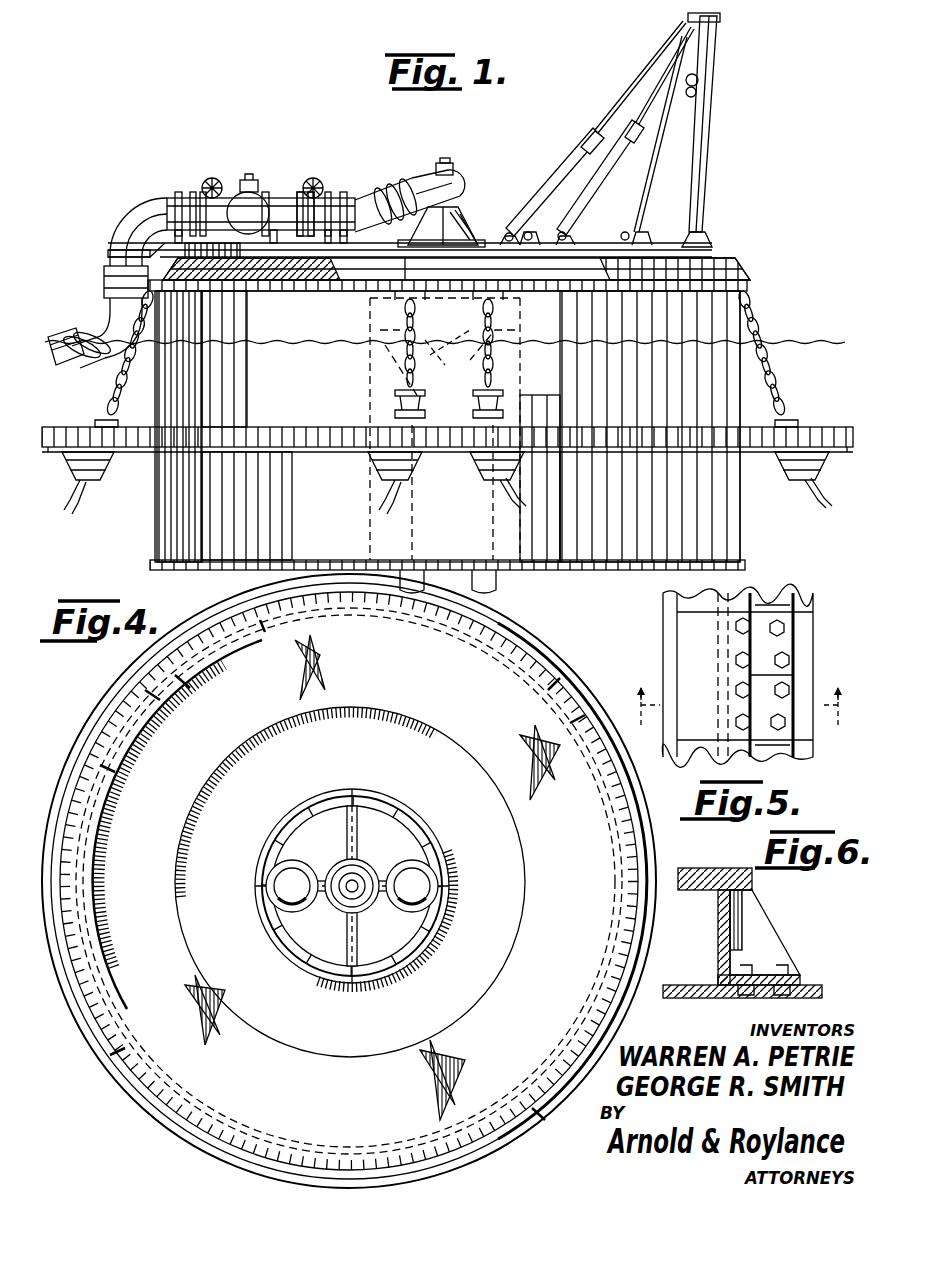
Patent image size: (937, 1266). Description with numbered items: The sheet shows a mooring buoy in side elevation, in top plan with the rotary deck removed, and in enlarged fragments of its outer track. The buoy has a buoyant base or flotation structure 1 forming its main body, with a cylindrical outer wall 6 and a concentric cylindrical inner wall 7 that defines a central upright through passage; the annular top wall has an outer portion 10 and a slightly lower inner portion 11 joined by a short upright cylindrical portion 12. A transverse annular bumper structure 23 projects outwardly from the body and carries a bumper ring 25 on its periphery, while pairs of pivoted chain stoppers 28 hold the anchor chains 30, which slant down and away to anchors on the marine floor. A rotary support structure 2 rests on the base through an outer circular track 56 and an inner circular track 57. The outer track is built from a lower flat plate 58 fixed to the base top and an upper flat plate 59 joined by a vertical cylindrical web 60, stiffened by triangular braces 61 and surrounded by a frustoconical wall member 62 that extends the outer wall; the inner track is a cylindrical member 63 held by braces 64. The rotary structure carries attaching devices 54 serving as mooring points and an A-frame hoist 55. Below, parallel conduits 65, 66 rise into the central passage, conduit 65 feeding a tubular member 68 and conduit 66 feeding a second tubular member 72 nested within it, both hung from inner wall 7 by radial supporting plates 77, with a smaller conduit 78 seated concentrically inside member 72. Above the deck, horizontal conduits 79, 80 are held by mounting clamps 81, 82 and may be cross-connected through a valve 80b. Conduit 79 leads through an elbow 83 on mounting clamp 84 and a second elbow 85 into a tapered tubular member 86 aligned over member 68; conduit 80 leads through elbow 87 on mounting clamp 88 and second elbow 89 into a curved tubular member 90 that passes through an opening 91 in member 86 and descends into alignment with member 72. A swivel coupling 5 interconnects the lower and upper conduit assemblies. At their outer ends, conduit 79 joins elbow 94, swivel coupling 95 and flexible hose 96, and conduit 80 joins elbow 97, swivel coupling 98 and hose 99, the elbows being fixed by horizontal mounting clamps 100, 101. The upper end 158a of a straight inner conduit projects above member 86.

In FIG. 1, the buoyant base or flotation structure 1 is at (768, 330).
In FIG. 1, the rotary support structure 2 is at (705, 240).
In FIG. 1, the swivel coupling 5 is at (403, 272).
In FIG. 1, the cylindrical outer wall 6 is at (664, 504).
In FIG. 5, the cylindrical outer wall 6 is at (740, 720).
In FIG. 1, the cylindrical inner wall 7 is at (365, 326).
In FIG. 4, the outer portion of top wall 10 is at (405, 672).
In FIG. 4, the inner portion of top wall 11 is at (383, 756).
In FIG. 4, the short upright cylindrical portion 12 is at (450, 740).
In FIG. 1, the transverse annular bumper structure 23 is at (205, 425).
In FIG. 1, the bumper ring 25 is at (283, 427).
In FIG. 1, the pivoted chain stopper 28 is at (98, 480).
In FIG. 1, the anchor chain 30 is at (112, 408).
In FIG. 1, the attaching device 54 is at (560, 236).
In FIG. 1, the A-frame hoist 55 is at (706, 130).
In FIG. 4, the outer circular track 56 is at (372, 622).
In FIG. 4, the inner circular track 57 is at (278, 828).
In FIG. 4, the lower flat circularly extending plate 58 is at (182, 672).
In FIG. 5, the lower flat circularly extending plate 58 is at (668, 650).
In FIG. 6, the lower flat circularly extending plate 58 is at (695, 985).
In FIG. 4, the upper flat circularly extending plate 59 is at (202, 655).
In FIG. 5, the upper flat circularly extending plate 59 is at (682, 628).
In FIG. 6, the upper flat circularly extending plate 59 is at (708, 868).
In FIG. 4, the vertical cylindrical web 60 is at (158, 698).
In FIG. 5, the vertical cylindrical web 60 is at (716, 690).
In FIG. 6, the vertical cylindrical web 60 is at (718, 930).
In FIG. 5, the triangular brace 61 is at (775, 600).
In FIG. 6, the triangular brace 61 is at (766, 935).
In FIG. 1, the frustoconical wall member 62 is at (722, 270).
In FIG. 4, the cylindrical member 63 is at (438, 830).
In FIG. 4, the brace 64 is at (418, 840).
In FIG. 1, the conduit 65 is at (497, 583).
In FIG. 4, the conduit 65 is at (432, 900).
In FIG. 1, the conduit 66 is at (424, 582).
In FIG. 4, the conduit 66 is at (272, 926).
In FIG. 1, the tubular member 68 is at (498, 338).
In FIG. 4, the tubular member 68 is at (395, 905).
In FIG. 1, the second tubular member 72 is at (430, 360).
In FIG. 4, the second tubular member 72 is at (320, 905).
In FIG. 1, the supporting plate 77 is at (370, 304).
In FIG. 4, the supporting plate 77 is at (282, 872).
In FIG. 4, the smaller conduit 78 is at (340, 868).
In FIG. 1, the conduit 79 is at (211, 179).
In FIG. 1, the conduit 80 is at (256, 175).
In FIG. 1, the valve 80b is at (260, 178).
In FIG. 1, the mounting clamp 81 is at (190, 195).
In FIG. 1, the mounting clamp 82 is at (242, 182).
In FIG. 1, the elbow 83 is at (372, 210).
In FIG. 1, the mounting clamp 84 is at (306, 192).
In FIG. 1, the second elbow 85 is at (436, 168).
In FIG. 1, the tapered tubular member 86 is at (470, 240).
In FIG. 1, the elbow 87 is at (386, 192).
In FIG. 1, the mounting clamp 88 is at (318, 190).
In FIG. 1, the second elbow 89 is at (431, 154).
In FIG. 1, the tubular member 90 is at (455, 178).
In FIG. 1, the opening 91 is at (416, 233).
In FIG. 1, the elbow 94 is at (140, 205).
In FIG. 1, the swivel coupling 95 is at (105, 285).
In FIG. 1, the flexible hose 96 is at (85, 360).
In FIG. 1, the elbow 97 is at (117, 200).
In FIG. 1, the swivel coupling 98 is at (94, 289).
In FIG. 1, the hose 99 is at (95, 352).
In FIG. 1, the mounting clamp 100 is at (140, 240).
In FIG. 1, the mounting clamp 101 is at (102, 219).
In FIG. 1, the upper end of conduit 158a is at (450, 163).